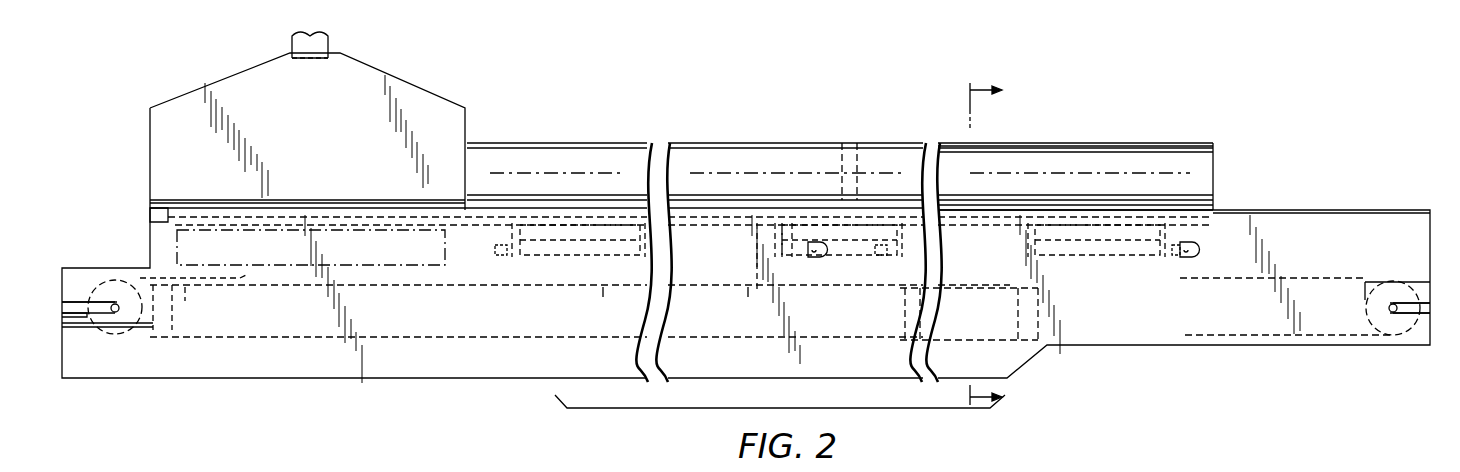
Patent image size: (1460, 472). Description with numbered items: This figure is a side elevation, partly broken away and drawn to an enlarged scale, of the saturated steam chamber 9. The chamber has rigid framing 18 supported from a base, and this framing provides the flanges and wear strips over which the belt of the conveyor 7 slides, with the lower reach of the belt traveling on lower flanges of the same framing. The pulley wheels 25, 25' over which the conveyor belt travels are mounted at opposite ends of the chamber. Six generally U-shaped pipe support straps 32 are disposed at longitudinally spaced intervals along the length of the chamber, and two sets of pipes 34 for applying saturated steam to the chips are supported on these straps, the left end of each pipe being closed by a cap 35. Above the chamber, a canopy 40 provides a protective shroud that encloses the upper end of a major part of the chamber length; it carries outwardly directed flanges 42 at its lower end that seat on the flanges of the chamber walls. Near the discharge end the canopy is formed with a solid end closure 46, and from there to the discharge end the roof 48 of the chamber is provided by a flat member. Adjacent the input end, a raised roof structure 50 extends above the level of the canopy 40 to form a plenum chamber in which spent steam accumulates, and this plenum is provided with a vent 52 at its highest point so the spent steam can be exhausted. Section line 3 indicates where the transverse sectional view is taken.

The section line 3- 3 is at (780, 245).
The conveyor 7 is at (108, 284).
The saturated steam chamber 9 is at (584, 108).
The rigid framing 18 is at (428, 335).
The pulley wheel 25 is at (102, 281).
The pulley wheel 25' is at (1381, 334).
The pipe support strap 32 is at (620, 238).
The pipe 34 is at (731, 255).
The cap 35 is at (500, 256).
The canopy 40 is at (752, 170).
The outwardly directed flange 42 is at (1193, 197).
The solid end closure 46 is at (1213, 165).
The roof 48 is at (1313, 213).
The raised roof structure 50 is at (382, 72).
The vent 52 is at (330, 42).